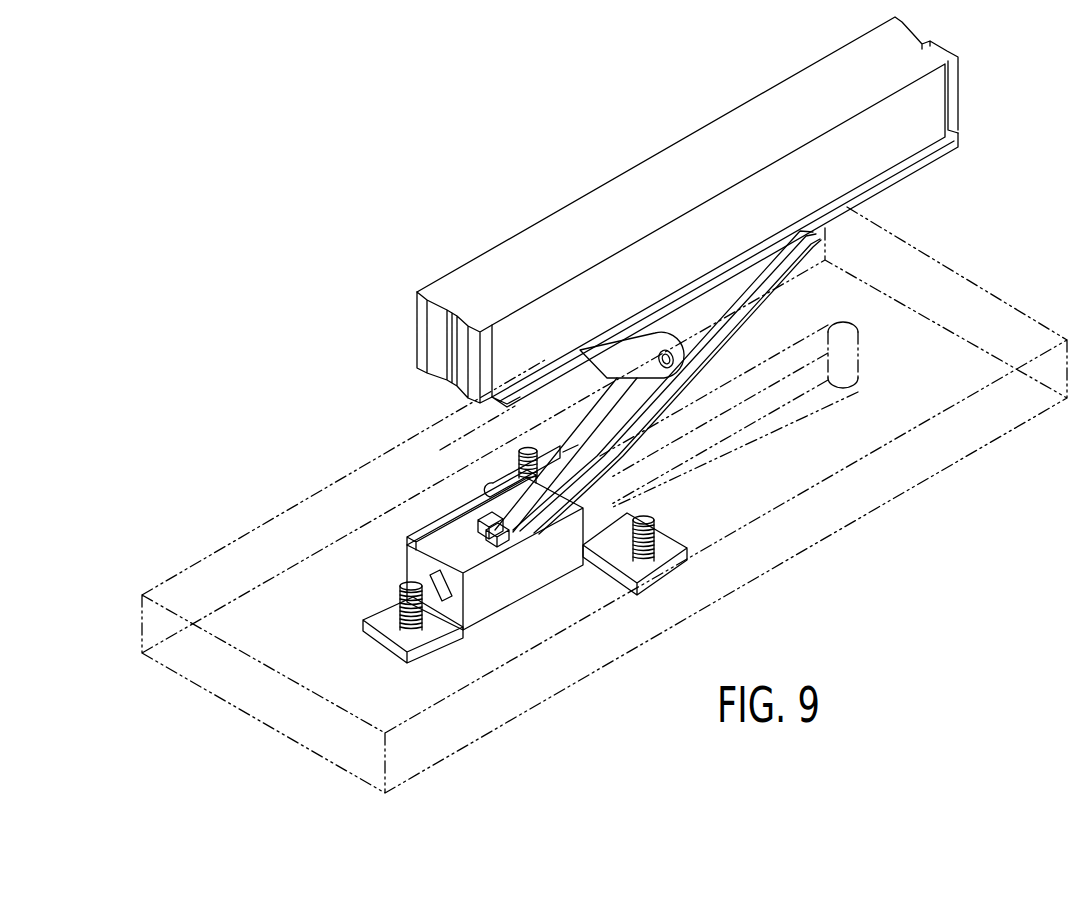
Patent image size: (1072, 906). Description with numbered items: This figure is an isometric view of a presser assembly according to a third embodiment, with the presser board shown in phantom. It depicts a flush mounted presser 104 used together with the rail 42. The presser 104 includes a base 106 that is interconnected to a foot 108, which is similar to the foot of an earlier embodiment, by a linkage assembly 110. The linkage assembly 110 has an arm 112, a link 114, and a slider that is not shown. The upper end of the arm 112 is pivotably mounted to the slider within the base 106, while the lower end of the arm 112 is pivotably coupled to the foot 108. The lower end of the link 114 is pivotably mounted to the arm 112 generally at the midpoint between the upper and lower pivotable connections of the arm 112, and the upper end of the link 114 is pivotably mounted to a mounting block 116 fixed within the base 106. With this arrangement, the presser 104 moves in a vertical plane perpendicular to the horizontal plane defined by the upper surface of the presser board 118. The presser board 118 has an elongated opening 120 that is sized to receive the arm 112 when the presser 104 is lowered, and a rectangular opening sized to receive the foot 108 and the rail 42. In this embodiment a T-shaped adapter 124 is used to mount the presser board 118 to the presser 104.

The rail 42 is at (533, 571).
The flush mounted presser 104 is at (366, 305).
The base 106 is at (702, 128).
The foot 108 is at (480, 535).
The linkage assembly 110 is at (500, 443).
The arm 112 is at (698, 323).
The link 114 is at (612, 363).
The mounting block 116 is at (443, 342).
The presser board 118 is at (232, 542).
The elongated opening 120 is at (843, 322).
The T-shaped adapter 124 is at (387, 657).